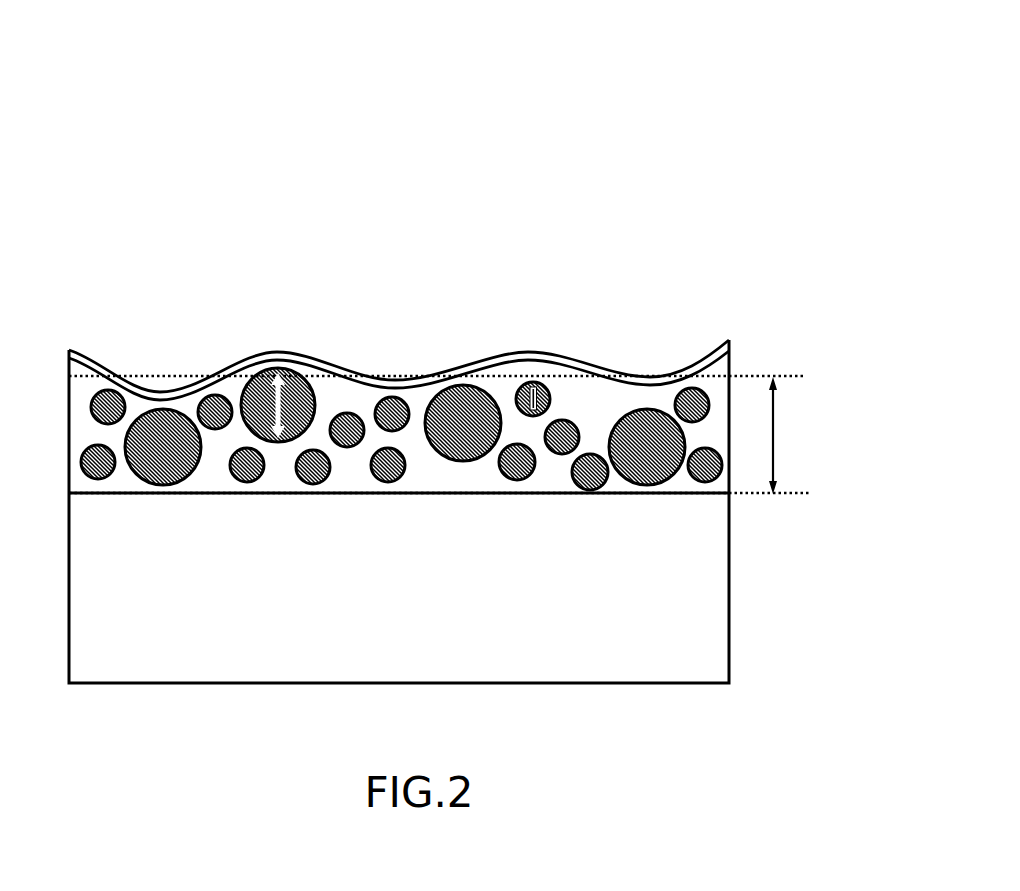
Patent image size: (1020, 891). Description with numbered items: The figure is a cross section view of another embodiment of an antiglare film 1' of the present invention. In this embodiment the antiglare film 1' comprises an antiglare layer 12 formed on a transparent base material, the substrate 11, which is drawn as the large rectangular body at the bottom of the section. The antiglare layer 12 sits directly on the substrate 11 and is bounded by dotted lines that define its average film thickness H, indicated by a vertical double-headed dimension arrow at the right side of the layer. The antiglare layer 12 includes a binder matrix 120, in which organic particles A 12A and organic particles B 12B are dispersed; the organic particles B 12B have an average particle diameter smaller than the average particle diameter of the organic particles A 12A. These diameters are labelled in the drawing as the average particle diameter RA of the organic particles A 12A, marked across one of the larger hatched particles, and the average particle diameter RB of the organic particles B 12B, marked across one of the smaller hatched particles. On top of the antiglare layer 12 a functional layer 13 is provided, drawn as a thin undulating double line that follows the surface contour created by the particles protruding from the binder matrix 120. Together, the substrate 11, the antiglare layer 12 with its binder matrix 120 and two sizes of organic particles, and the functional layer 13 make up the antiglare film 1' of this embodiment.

The antiglare film 1' is at (551, 87).
The base material (substrate) 11 is at (678, 570).
The antiglare layer 12 is at (835, 350).
The organic particle A 12A is at (307, 377).
The organic particle B 12B is at (544, 386).
The binder matrix 120 is at (618, 405).
The functional layer 13 is at (741, 334).
The average film thickness of antiglare layer H is at (789, 435).
The average particle diameter of organic particles A RA is at (252, 377).
The average particle diameter of organic particles B RB is at (520, 388).